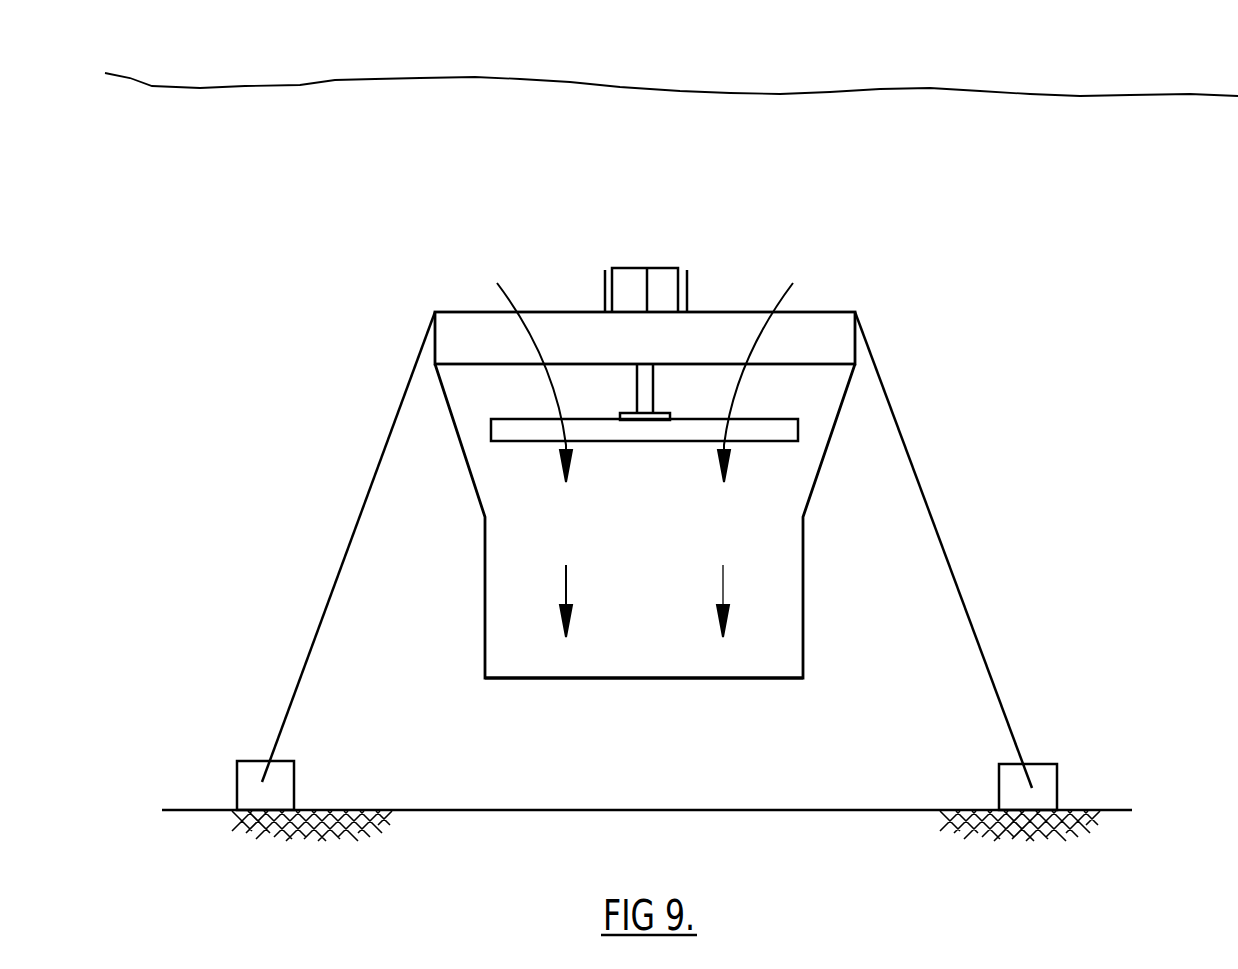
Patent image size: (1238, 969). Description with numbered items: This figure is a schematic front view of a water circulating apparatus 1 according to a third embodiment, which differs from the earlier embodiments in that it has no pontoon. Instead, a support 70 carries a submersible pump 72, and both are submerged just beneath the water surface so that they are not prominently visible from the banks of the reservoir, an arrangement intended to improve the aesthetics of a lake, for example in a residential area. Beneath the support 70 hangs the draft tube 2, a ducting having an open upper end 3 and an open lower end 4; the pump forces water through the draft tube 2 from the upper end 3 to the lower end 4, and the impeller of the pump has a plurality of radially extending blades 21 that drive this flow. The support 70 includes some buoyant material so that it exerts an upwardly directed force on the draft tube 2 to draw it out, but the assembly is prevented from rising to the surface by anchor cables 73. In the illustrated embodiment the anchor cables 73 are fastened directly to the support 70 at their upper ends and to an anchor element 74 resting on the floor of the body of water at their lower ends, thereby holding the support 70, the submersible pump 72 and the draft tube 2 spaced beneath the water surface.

The apparatus 1 is at (342, 343).
The draft tube 2 is at (535, 592).
The open upper end 3 is at (862, 307).
The open lower end 4 is at (835, 683).
The radially extending blades 21 is at (498, 430).
The support 70 is at (558, 330).
The submersible pump 72 is at (628, 280).
The anchor cables 73 is at (303, 661).
The anchor element 74 is at (250, 788).